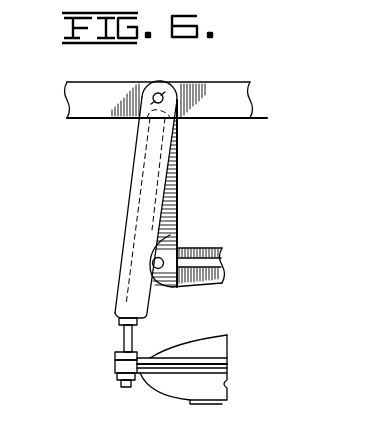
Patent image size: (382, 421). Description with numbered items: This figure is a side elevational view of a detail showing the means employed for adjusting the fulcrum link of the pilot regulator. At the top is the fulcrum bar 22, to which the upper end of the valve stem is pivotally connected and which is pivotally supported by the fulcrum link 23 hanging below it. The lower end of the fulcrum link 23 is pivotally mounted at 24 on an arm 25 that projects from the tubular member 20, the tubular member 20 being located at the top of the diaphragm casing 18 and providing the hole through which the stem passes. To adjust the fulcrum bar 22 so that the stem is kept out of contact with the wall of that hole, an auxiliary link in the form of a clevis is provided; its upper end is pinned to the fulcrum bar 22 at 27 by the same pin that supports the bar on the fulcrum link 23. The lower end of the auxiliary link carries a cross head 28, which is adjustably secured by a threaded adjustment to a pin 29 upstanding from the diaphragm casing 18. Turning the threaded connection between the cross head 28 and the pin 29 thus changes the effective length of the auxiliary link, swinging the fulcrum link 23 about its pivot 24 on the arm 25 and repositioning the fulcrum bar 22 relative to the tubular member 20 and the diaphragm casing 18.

The diaphragm casing 18 is at (112, 365).
The tubular member 20 is at (132, 247).
The fulcrum bar 22 is at (236, 103).
The fulcrum link 23 is at (170, 203).
The pivot mounting 24 is at (163, 257).
The arm 25 is at (213, 278).
The pin connection 27 is at (170, 88).
The cross head 28 is at (120, 313).
The pin 29 is at (122, 335).